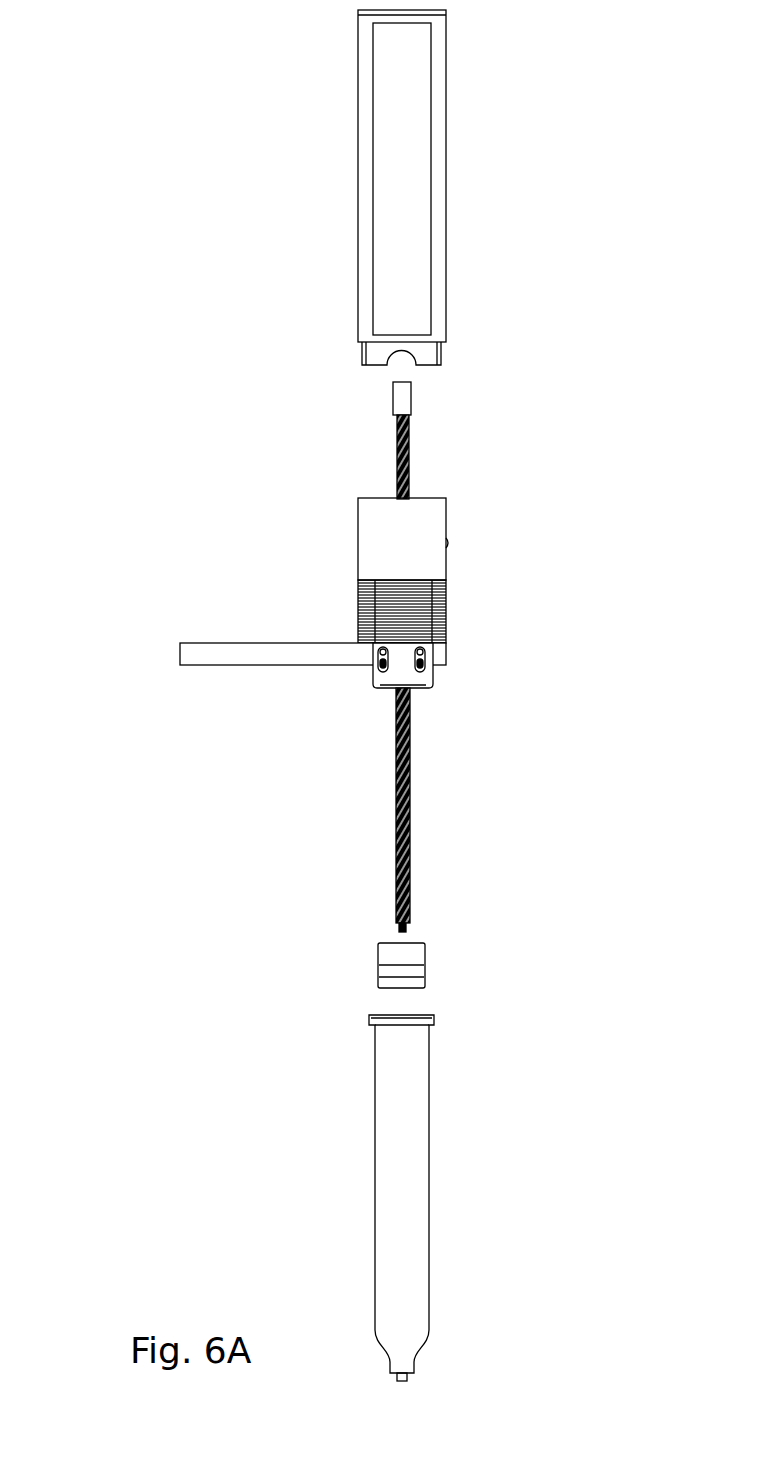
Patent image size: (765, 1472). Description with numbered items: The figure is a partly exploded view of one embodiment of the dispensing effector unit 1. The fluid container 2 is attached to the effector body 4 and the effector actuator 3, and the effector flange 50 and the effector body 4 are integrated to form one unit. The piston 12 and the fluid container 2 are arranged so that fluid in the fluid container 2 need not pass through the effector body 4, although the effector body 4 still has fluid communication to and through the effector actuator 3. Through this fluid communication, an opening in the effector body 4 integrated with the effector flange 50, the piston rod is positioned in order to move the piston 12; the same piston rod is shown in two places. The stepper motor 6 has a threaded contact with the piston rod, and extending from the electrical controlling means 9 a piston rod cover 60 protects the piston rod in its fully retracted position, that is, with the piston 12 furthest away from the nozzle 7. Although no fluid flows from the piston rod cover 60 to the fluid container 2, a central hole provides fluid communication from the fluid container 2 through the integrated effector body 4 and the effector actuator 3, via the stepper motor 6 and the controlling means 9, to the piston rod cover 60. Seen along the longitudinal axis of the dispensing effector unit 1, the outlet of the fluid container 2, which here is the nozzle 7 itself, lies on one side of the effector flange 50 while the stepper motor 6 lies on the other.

The dispensing effector unit 1 is at (158, 168).
The piston rod cover 60 is at (437, 171).
The controlling means 9 is at (430, 517).
The stepper motor 6 is at (438, 621).
The effector flange 50 is at (225, 655).
The effector actuator 3 is at (413, 689).
The effector body 4 is at (367, 650).
The piston 12 is at (407, 960).
The fluid container 2 is at (425, 1200).
The nozzle 7 is at (410, 1366).